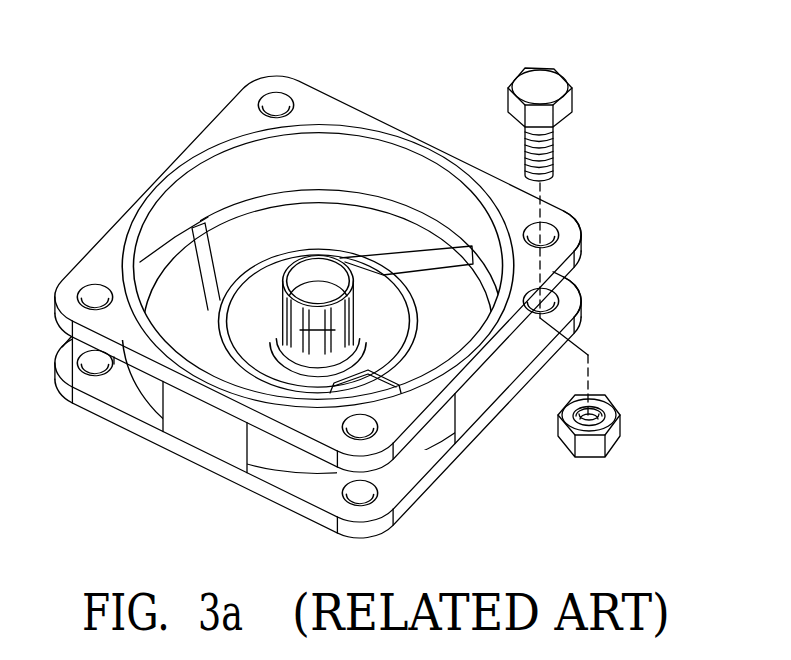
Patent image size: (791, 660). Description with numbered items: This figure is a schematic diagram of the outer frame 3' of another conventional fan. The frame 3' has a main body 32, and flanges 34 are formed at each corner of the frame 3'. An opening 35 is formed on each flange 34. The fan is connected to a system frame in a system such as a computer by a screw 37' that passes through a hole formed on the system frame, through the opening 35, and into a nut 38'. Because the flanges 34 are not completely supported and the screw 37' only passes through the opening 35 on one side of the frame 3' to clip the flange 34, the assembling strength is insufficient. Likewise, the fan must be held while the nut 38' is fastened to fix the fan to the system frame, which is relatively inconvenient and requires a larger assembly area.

The frame 3' is at (391, 285).
The main body 32 is at (471, 427).
The flange 34 is at (552, 265).
The opening 35 is at (547, 232).
The screw 37' is at (595, 243).
The nut 38' is at (650, 426).